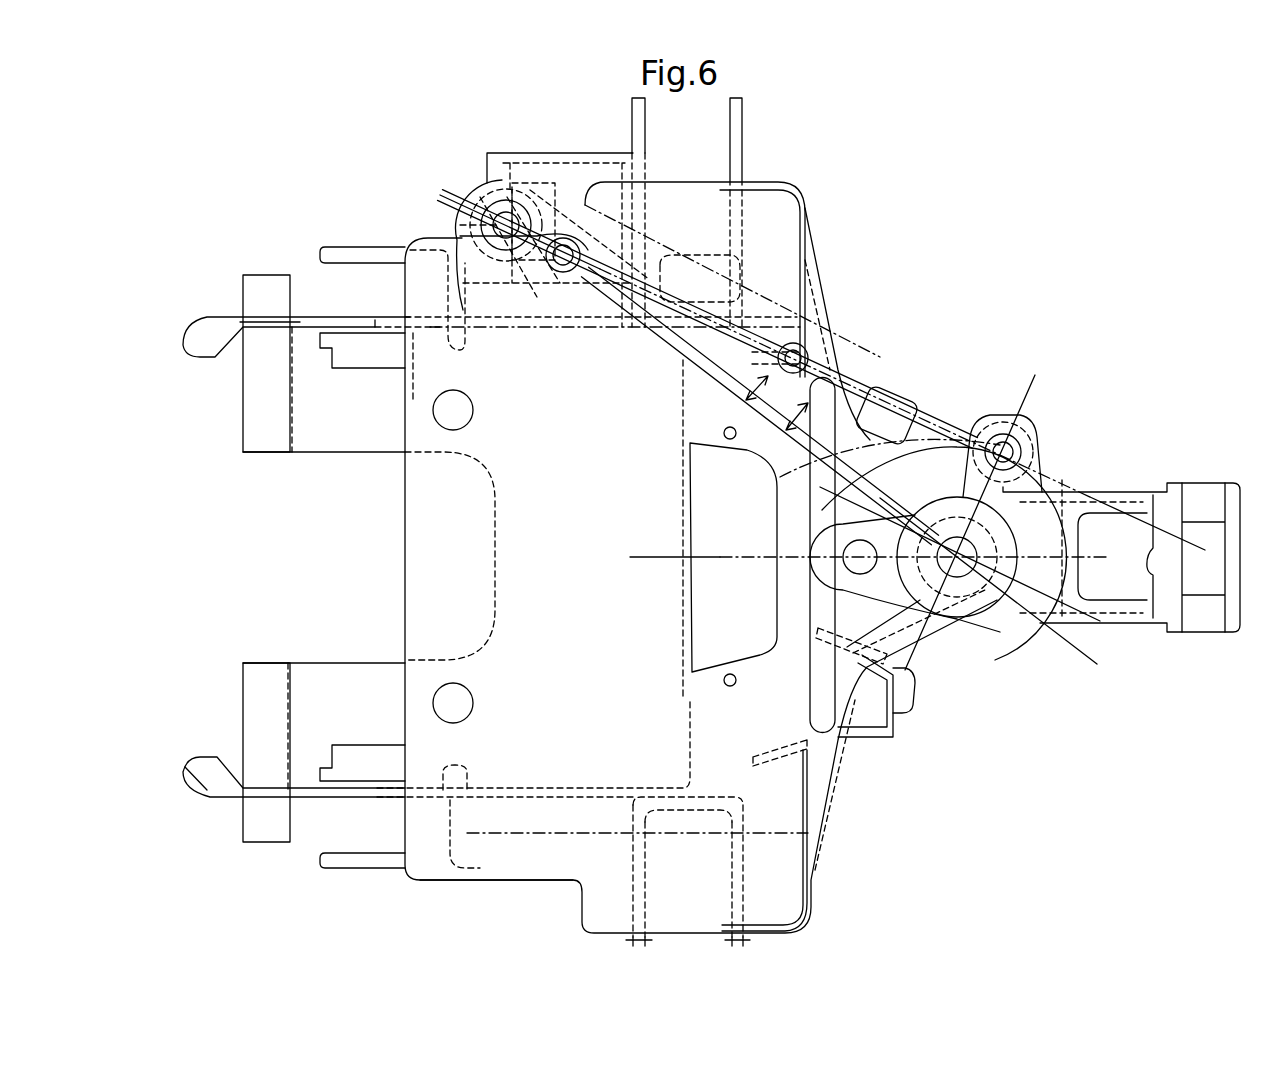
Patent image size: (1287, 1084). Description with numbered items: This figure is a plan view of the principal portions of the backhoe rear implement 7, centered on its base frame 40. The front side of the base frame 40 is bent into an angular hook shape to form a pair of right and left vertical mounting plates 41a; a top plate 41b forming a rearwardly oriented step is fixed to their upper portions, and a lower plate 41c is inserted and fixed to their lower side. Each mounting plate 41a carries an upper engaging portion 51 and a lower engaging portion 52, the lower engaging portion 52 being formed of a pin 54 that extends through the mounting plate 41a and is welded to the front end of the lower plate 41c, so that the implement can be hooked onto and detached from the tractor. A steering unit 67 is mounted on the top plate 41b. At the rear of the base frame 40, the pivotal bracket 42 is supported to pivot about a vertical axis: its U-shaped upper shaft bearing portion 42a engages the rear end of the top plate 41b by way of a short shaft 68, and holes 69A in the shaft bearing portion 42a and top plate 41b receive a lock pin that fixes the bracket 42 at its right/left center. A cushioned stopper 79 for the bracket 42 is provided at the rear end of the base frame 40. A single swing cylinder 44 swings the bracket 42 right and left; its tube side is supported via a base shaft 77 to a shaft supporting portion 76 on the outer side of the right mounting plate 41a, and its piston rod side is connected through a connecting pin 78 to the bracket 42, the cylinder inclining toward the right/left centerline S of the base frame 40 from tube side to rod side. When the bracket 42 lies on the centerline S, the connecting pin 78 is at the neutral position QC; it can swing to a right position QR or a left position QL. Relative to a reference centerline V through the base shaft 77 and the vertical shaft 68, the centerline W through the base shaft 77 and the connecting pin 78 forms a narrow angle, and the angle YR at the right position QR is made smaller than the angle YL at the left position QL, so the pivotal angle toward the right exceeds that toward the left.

The rear implement 7 is at (396, 163).
The base shaft 77 is at (490, 205).
The shaft supporting portion 76 is at (540, 178).
The upper engaging portion 51 is at (346, 236).
The lower engaging portion 52 is at (206, 302).
The pin 54 is at (268, 455).
The swing cylinder 44 is at (853, 340).
The centerline W is at (938, 398).
The connecting pin 78 is at (1018, 437).
The neutral position QC is at (1047, 376).
The right position QR is at (840, 497).
The left position QL is at (1093, 632).
The reference centerline V is at (780, 477).
The right/left centerline S is at (665, 562).
The narrow angle YR is at (752, 392).
The narrow angle YL is at (778, 410).
The holes 69A is at (860, 575).
The upper shaft bearing portion 42a is at (895, 587).
The short shaft 68 is at (975, 622).
The pivotal bracket 42 is at (1167, 620).
The cushioned stopper 79 is at (907, 688).
The steering unit 67 is at (847, 672).
The base frame 40 is at (845, 801).
The mounting plates 41a is at (308, 795).
The top plate 41b is at (447, 882).
The lower plate 41c is at (545, 835).